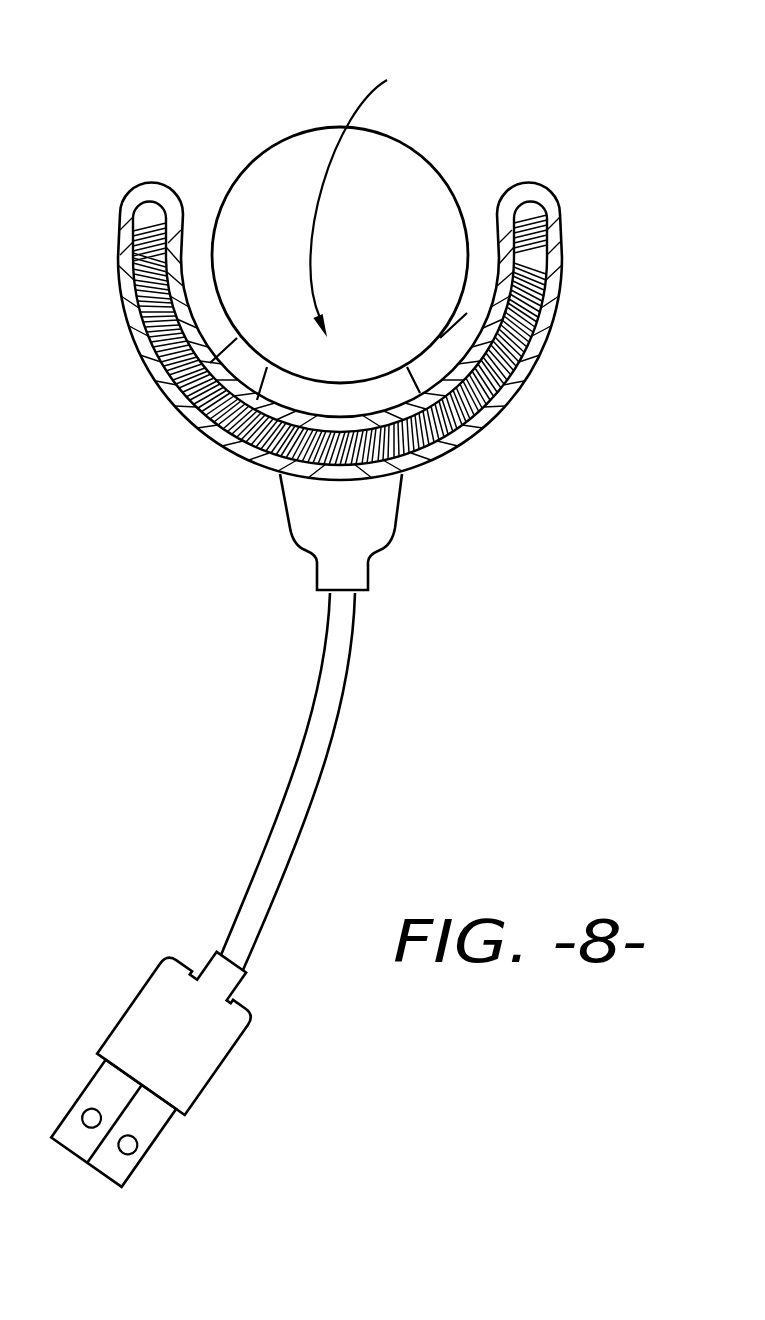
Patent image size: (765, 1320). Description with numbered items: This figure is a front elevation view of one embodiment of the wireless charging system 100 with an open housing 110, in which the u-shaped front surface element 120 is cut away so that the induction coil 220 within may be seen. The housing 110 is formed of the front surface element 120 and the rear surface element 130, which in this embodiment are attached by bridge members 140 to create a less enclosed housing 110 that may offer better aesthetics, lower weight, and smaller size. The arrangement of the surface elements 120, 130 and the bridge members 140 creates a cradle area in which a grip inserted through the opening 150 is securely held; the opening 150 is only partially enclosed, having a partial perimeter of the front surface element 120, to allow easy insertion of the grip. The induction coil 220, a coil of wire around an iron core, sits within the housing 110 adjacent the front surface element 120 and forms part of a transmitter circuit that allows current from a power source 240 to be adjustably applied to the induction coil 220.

The wireless charging system 100 is at (210, 85).
The housing 110 is at (141, 182).
The front surface element 120 is at (541, 182).
The rear surface element 130 is at (404, 143).
The bridge members 140 is at (237, 363).
The opening 150 is at (368, 191).
The induction coil 220 is at (531, 337).
The power source 240 is at (373, 513).